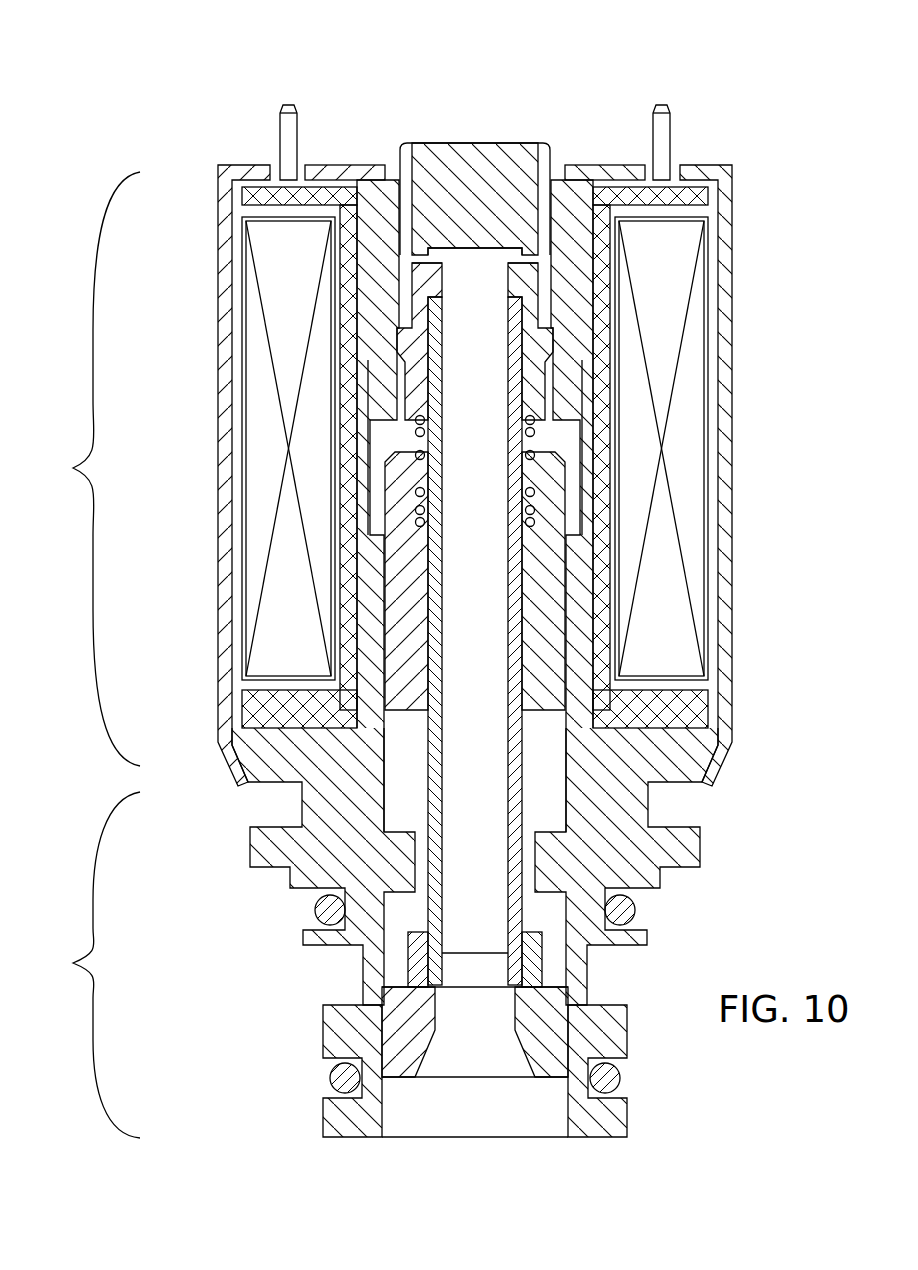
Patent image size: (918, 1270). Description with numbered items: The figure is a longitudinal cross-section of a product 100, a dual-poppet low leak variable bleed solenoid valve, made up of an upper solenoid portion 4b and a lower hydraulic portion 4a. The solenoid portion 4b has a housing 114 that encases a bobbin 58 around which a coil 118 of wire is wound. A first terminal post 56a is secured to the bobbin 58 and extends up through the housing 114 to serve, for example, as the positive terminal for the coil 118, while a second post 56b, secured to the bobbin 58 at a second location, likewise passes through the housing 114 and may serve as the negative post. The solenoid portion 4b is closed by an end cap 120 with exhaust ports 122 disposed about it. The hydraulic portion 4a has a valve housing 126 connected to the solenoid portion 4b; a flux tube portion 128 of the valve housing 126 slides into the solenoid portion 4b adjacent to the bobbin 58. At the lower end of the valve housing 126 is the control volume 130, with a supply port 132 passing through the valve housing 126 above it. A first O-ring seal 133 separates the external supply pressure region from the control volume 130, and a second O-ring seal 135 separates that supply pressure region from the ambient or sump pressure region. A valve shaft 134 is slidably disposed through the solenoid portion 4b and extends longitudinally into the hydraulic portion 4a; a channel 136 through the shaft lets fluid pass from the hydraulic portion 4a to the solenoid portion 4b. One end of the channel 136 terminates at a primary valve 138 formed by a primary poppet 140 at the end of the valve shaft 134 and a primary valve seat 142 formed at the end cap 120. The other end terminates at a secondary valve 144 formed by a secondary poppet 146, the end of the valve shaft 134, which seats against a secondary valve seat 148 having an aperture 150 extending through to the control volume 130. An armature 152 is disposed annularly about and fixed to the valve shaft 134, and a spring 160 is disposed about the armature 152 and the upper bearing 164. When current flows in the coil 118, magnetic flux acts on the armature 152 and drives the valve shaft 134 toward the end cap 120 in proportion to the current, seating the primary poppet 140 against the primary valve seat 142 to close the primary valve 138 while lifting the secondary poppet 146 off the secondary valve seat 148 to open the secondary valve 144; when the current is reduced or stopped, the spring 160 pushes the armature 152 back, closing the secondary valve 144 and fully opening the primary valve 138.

The product 100 is at (600, 128).
The housing 114 is at (226, 248).
The bobbin 58 is at (254, 196).
The first terminal post 56a is at (288, 128).
The second post 56b is at (668, 150).
The coil 118 is at (265, 405).
The end cap 120 is at (498, 150).
The exhaust ports 122 is at (398, 140).
The primary valve seat 142 is at (455, 245).
The valve housing 126 is at (708, 822).
The flux tube portion 128 is at (578, 688).
The armature 152 is at (548, 617).
The upper bearing 164 is at (530, 385).
The spring 160 is at (530, 495).
The primary valve 138 is at (404, 263).
The primary poppet 140 is at (430, 282).
The valve shaft 134 is at (437, 760).
The channel 136 is at (500, 782).
The second O-ring seal 135 is at (328, 912).
The secondary poppet 146 is at (432, 962).
The secondary valve 144 is at (554, 968).
The secondary valve seat 148 is at (408, 1020).
The supply port 132 is at (385, 986).
The aperture 150 is at (494, 1037).
The control volume 130 is at (530, 1120).
The first O-ring seal 133 is at (345, 1080).
The hydraulic portion 4a is at (89, 965).
The solenoid portion 4b is at (89, 469).